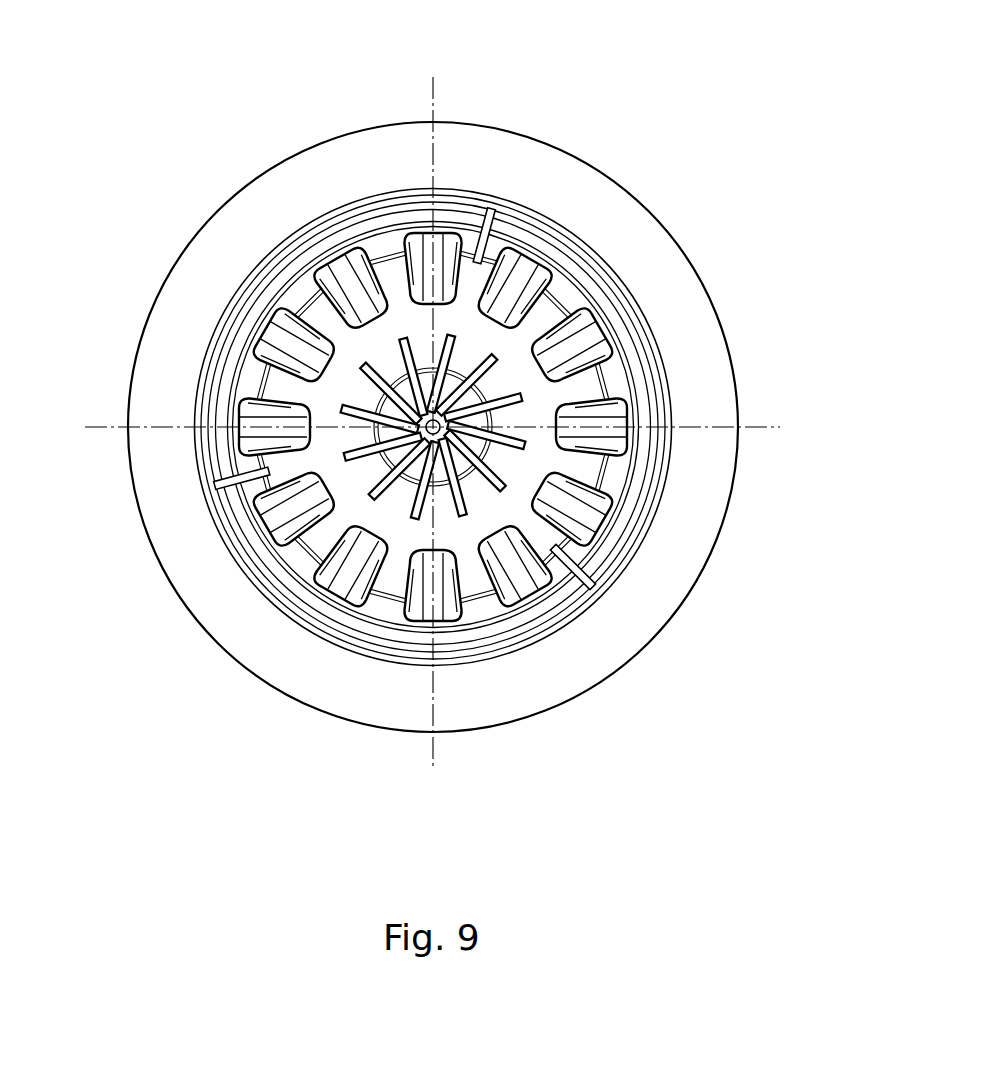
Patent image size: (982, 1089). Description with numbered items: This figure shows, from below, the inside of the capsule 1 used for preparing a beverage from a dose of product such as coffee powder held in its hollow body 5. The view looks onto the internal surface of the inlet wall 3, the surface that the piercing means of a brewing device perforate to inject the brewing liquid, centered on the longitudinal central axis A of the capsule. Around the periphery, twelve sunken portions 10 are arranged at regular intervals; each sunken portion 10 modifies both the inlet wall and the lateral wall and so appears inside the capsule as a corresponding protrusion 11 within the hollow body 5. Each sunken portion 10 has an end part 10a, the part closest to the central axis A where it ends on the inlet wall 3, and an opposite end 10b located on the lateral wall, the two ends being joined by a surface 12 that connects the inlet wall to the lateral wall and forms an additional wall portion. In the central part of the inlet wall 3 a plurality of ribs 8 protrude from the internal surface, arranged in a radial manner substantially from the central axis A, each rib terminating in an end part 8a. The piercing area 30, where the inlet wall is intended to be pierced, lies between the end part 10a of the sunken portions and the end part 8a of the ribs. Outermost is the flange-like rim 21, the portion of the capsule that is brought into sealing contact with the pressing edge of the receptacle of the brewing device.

The capsule 1 is at (166, 96).
The inlet wall 3 is at (310, 462).
The hollow body 5 is at (345, 517).
The ribs 8 is at (429, 434).
The end part of the ribs 8a is at (360, 357).
The sunken portion 10 is at (434, 543).
The end part of the sunken portion 10a is at (300, 352).
The end of the sunken portion 10b is at (600, 333).
The protrusion 11 is at (342, 583).
The surface 12 is at (608, 523).
The flange-like rim 21 is at (621, 232).
The piercing area 30 is at (306, 397).
The central axis A is at (440, 418).